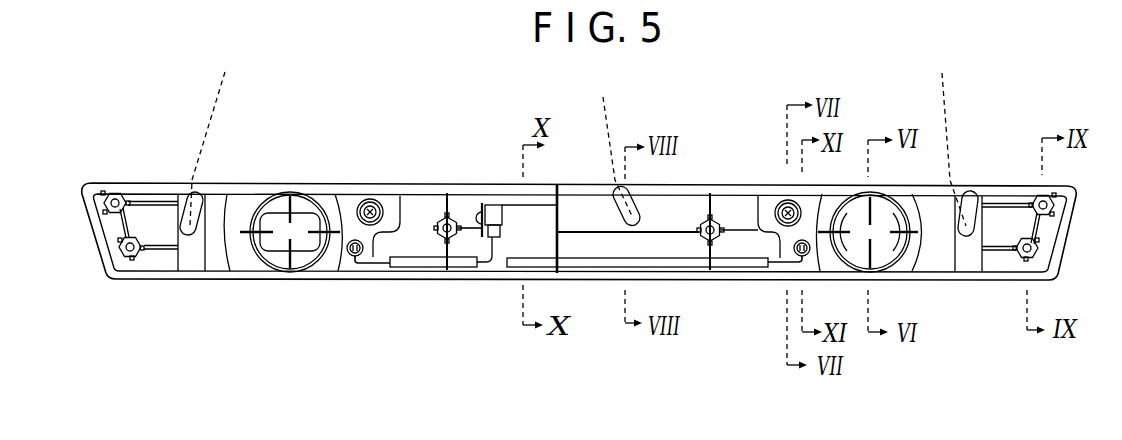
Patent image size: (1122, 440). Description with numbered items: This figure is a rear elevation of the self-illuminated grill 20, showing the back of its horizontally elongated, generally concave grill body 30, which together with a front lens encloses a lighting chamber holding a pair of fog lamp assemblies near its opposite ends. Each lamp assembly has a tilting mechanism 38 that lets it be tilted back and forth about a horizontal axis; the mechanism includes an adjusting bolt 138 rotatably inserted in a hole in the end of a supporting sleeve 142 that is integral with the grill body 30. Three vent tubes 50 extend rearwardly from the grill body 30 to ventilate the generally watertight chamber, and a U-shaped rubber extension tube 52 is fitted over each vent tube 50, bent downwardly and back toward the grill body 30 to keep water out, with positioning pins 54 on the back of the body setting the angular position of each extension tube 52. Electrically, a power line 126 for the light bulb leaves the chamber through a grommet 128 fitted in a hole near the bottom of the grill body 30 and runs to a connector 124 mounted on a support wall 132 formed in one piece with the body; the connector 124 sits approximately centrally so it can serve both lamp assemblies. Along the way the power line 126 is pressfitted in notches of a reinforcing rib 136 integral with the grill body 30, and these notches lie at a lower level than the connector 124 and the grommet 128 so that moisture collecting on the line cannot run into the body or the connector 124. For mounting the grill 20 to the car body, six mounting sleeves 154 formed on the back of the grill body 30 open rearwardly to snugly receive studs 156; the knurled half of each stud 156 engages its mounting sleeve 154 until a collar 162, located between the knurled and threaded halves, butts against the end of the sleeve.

The self-illuminated grill 20 is at (1054, 114).
The grill body 30 is at (420, 200).
The tilting mechanism 38 is at (805, 200).
The vent tube 50 is at (578, 137).
The extension tube 52 is at (224, 195).
The positioning pin 54 is at (178, 197).
The connector 124 is at (493, 204).
The power line 126 is at (790, 262).
The grommet 128 is at (808, 257).
The support wall 132 is at (476, 211).
The reinforcing rib 136 is at (560, 235).
The adjusting bolt 138 is at (763, 196).
The supporting sleeve 142 is at (787, 202).
The mounting sleeve 154 is at (104, 197).
The stud 156 is at (116, 192).
The collar 162 is at (122, 207).